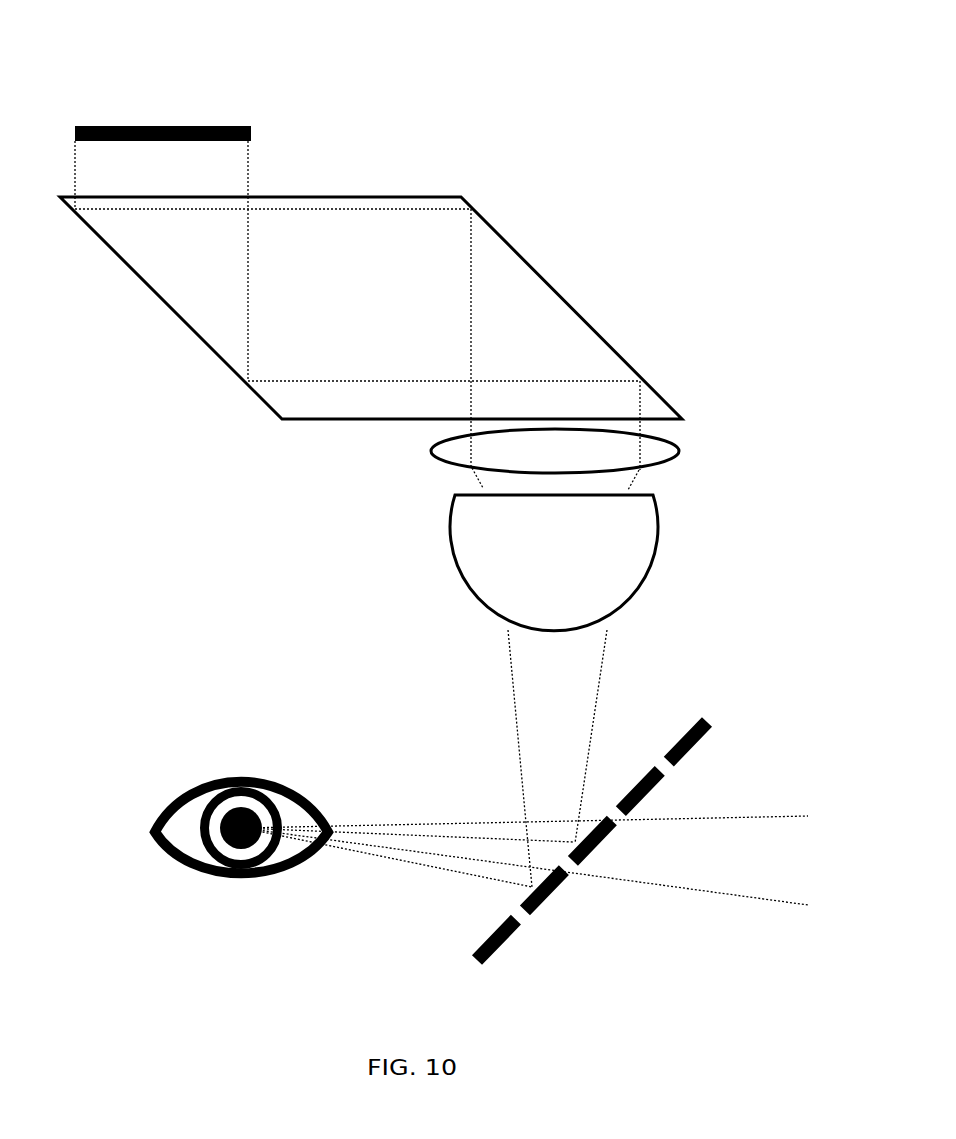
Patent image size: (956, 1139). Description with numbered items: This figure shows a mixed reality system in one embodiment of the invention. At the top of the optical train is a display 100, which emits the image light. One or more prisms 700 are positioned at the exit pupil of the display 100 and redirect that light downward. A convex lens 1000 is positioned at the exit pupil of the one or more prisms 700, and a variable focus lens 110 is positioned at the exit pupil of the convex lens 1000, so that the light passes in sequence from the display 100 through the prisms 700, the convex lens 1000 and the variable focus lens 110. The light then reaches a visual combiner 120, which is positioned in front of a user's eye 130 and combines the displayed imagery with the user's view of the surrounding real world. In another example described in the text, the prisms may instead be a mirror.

The display 100 is at (200, 123).
The one or more prisms 700 is at (504, 287).
The convex lens 1000 is at (465, 456).
The variable focus lens 110 is at (627, 532).
The visual combiner 120 is at (552, 895).
The user's eye 130 is at (232, 855).